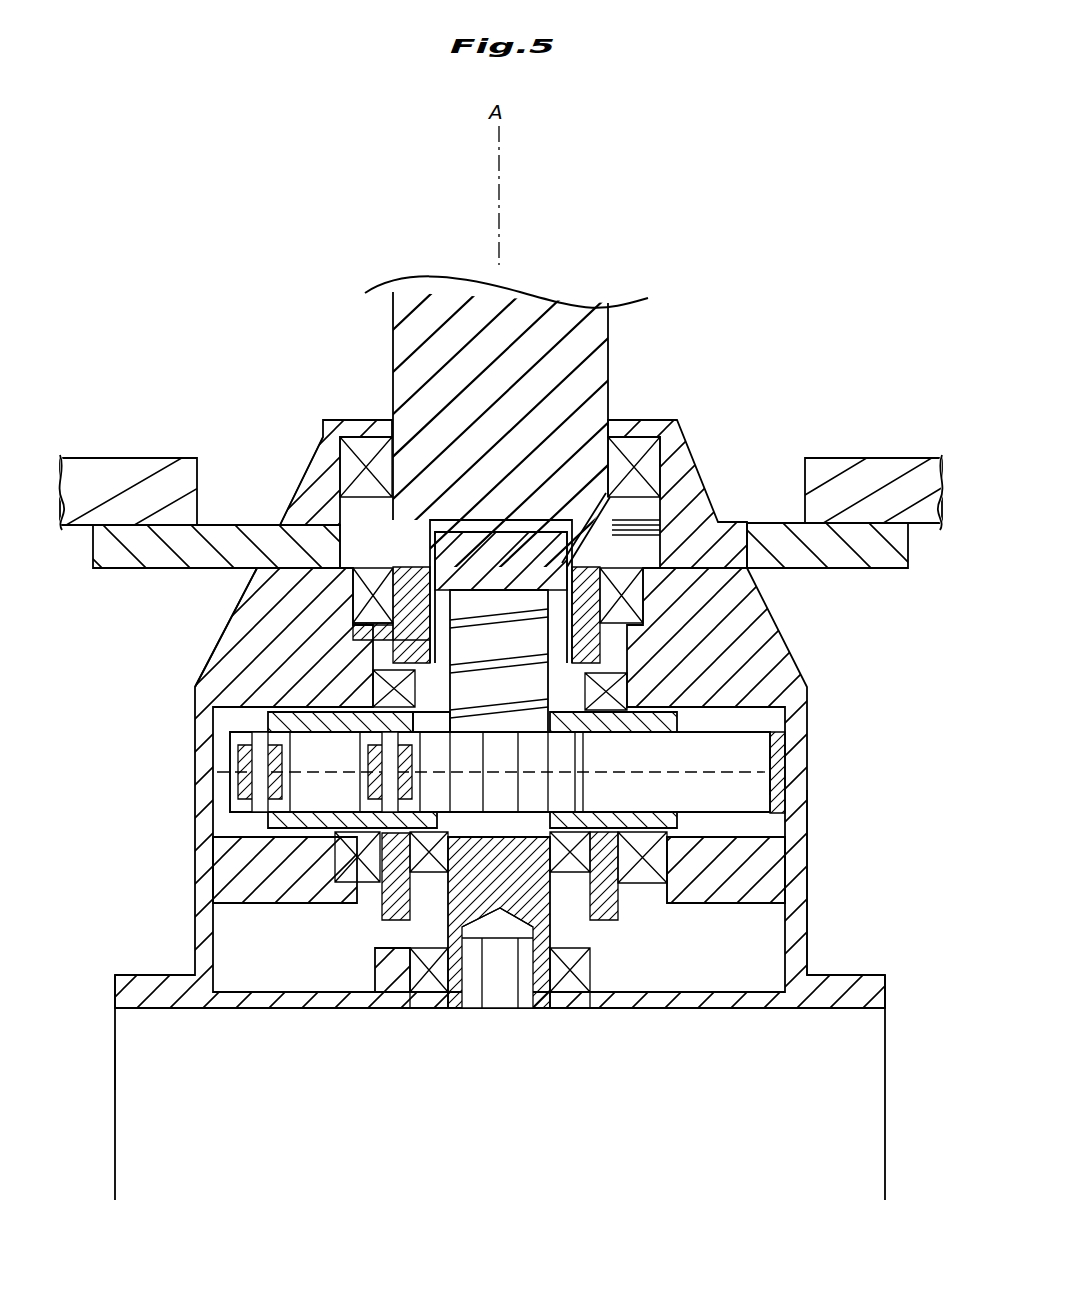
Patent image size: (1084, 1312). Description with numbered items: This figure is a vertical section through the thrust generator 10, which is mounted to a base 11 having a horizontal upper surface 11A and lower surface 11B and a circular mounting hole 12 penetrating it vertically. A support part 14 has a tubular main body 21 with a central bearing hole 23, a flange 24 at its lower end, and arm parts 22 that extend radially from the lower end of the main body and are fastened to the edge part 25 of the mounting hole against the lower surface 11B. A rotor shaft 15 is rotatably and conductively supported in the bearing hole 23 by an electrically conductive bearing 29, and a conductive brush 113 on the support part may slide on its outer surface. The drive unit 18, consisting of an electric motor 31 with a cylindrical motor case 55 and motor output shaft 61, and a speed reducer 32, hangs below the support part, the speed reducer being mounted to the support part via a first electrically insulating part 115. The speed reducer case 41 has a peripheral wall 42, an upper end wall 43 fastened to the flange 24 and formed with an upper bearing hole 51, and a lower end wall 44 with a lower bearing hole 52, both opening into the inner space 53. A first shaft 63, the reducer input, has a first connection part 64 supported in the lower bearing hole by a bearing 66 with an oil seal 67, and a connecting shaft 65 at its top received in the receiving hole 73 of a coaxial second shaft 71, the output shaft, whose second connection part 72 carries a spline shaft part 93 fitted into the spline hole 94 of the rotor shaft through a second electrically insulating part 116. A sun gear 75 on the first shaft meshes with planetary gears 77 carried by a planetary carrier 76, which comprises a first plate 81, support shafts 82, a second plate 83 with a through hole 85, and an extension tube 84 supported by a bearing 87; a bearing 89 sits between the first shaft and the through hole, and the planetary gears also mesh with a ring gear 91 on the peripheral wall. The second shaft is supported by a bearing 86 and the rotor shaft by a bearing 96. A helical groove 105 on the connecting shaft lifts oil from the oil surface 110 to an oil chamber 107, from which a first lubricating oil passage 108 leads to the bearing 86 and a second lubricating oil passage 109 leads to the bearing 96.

The thrust generator 10 is at (645, 232).
The base 11 is at (97, 462).
The upper surface 11A is at (150, 462).
The lower surface 11B is at (72, 530).
The mounting hole 12 is at (803, 458).
The support part 14 is at (650, 400).
The rotor shaft 15 is at (397, 345).
The drive unit 18 is at (876, 898).
The main body 21 is at (320, 455).
The arm parts 22 is at (888, 570).
The bearing hole 23 is at (333, 480).
The flange 24 is at (272, 522).
The edge part 25 is at (838, 458).
The bearing 29 is at (366, 452).
The electric motor 31 is at (890, 1068).
The speed reducer 32 is at (813, 835).
The speed reducer case 41 is at (822, 730).
The peripheral wall 42 is at (796, 762).
The upper end wall 43 is at (250, 603).
The lower end wall 44 is at (296, 1010).
The upper bearing hole 51 is at (405, 648).
The lower bearing hole 52 is at (570, 986).
The inner space 53 is at (727, 955).
The motor case 55 is at (117, 1065).
The motor output shaft 61 is at (472, 1000).
The first shaft 63 is at (402, 912).
The first connection part 64 is at (452, 990).
The connecting shaft 65 is at (645, 600).
The bearing 66 is at (412, 968).
The oil seal 67 is at (416, 1005).
The second shaft 71 is at (452, 545).
The second connection part 72 is at (540, 635).
The receiving hole 73 is at (600, 675).
The sun gear 75 is at (583, 796).
The planetary carrier 76 is at (683, 818).
The planetary gears 77 is at (242, 770).
The first plate 81 is at (240, 715).
The support shafts 82 is at (300, 843).
The second plate 83 is at (305, 797).
The extension tube 84 is at (622, 906).
The through hole 85 is at (490, 985).
The bearing 86 is at (378, 688).
The bearing 87 is at (345, 858).
The bearing 89 is at (574, 884).
The ring gear 91 is at (770, 790).
The spline shaft part 93 is at (646, 592).
The spline hole 94 is at (362, 560).
The bearing 96 is at (356, 596).
The helical groove 105 is at (395, 632).
The oil chamber 107 is at (505, 600).
The first lubricating oil passage 108 is at (432, 690).
The second lubricating oil passage 109 is at (598, 495).
The oil surface 110 is at (678, 760).
The conductive brush 113 is at (643, 520).
The first electrically insulating part 115 is at (738, 572).
The second electrically insulating part 116 is at (600, 630).